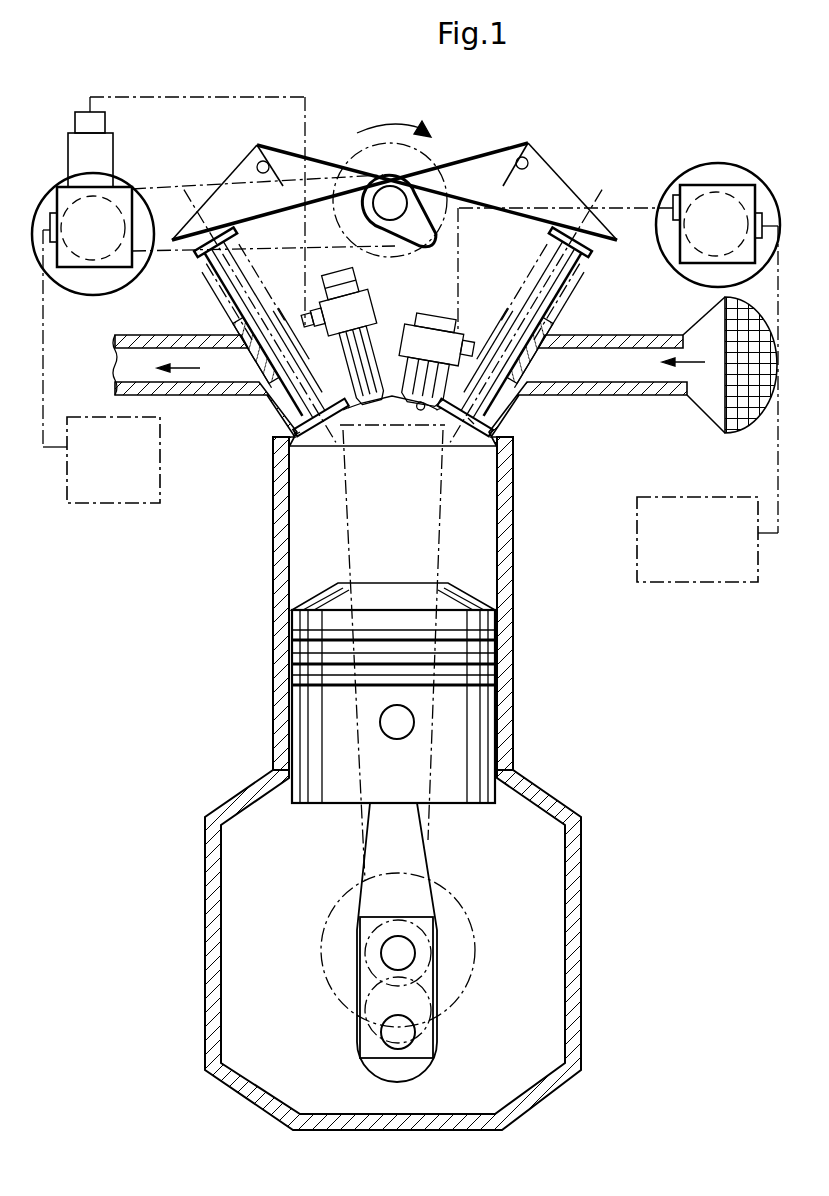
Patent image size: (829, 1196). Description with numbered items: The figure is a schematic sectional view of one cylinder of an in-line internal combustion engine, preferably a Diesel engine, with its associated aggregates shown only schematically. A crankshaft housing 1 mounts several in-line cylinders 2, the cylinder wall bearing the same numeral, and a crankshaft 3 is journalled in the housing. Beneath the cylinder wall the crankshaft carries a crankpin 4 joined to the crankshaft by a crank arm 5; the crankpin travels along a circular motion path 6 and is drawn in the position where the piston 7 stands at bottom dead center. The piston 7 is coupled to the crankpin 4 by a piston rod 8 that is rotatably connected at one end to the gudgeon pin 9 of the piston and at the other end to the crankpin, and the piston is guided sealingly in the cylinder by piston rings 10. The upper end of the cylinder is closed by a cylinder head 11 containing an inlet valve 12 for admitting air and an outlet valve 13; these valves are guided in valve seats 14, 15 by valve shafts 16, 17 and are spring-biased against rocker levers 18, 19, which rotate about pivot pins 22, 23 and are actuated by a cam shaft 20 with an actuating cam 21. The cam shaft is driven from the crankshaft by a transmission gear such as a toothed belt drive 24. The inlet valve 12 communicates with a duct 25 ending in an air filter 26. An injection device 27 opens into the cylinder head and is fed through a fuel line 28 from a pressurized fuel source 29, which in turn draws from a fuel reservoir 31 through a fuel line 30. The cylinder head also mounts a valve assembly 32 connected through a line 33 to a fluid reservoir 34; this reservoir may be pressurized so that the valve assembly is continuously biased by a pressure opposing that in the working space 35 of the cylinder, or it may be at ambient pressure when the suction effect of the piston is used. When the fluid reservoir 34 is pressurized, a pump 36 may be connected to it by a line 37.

The crankshaft housing 1 is at (573, 898).
The cylinder 2 is at (504, 608).
The crankshaft 3 is at (405, 955).
The crankpin 4 is at (405, 1040).
The crank arm 5 is at (440, 993).
The circular motion path 6 is at (458, 900).
The piston 7 is at (483, 747).
The piston rod 8 is at (380, 838).
The gudgeon pin 9 is at (405, 720).
The piston rings 10 is at (288, 637).
The cylinder head 11 is at (285, 438).
The inlet valve 12 is at (470, 422).
The outlet valve 13 is at (306, 441).
The valve seat 14 is at (437, 410).
The valve seat 15 is at (344, 411).
The valve shaft 16 is at (547, 278).
The valve shaft 17 is at (230, 278).
The rocker lever 18 is at (551, 183).
The rocker lever 19 is at (238, 168).
The cam shaft 20 is at (402, 196).
The actuating cam 21 is at (421, 234).
The pivot pin 22 is at (264, 160).
The pivot pin 23 is at (518, 157).
The toothed belt drive 24 is at (345, 525).
The duct 25 is at (635, 365).
The air filter 26 is at (707, 402).
The injection device 27 is at (363, 308).
The fuel line 28 is at (203, 97).
The pressurized fuel source 29 is at (62, 190).
The fuel line 30 is at (47, 374).
The fuel reservoir 31 is at (112, 497).
The valve assembly 32 is at (433, 405).
The line 33 is at (608, 207).
The fluid reservoir 34 is at (727, 205).
The working space 35 is at (480, 541).
The pump 36 is at (740, 572).
The line 37 is at (778, 437).